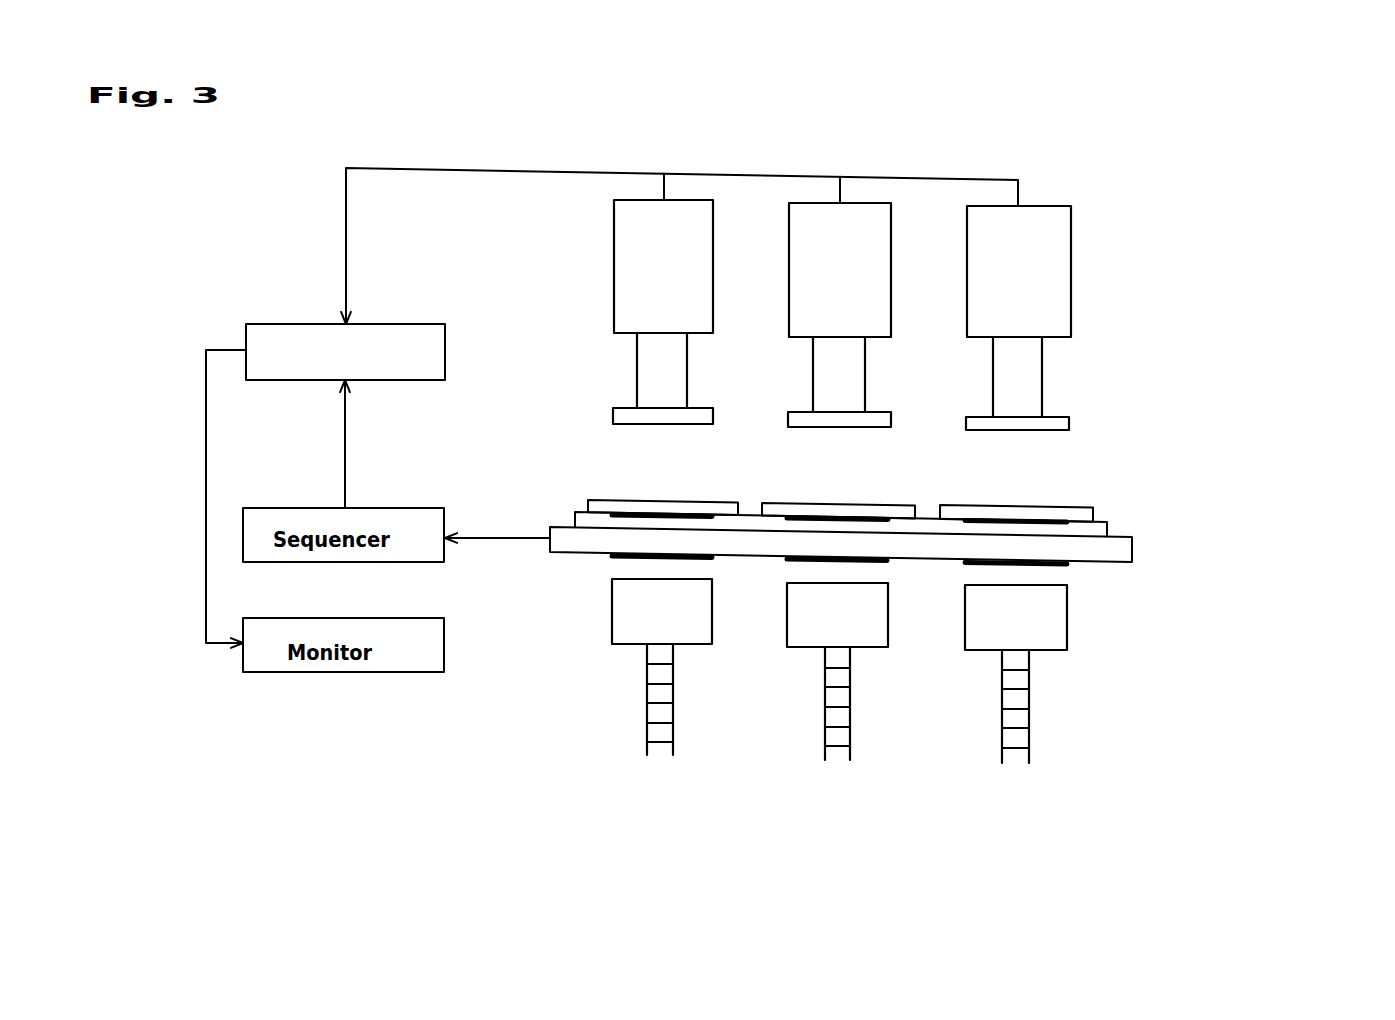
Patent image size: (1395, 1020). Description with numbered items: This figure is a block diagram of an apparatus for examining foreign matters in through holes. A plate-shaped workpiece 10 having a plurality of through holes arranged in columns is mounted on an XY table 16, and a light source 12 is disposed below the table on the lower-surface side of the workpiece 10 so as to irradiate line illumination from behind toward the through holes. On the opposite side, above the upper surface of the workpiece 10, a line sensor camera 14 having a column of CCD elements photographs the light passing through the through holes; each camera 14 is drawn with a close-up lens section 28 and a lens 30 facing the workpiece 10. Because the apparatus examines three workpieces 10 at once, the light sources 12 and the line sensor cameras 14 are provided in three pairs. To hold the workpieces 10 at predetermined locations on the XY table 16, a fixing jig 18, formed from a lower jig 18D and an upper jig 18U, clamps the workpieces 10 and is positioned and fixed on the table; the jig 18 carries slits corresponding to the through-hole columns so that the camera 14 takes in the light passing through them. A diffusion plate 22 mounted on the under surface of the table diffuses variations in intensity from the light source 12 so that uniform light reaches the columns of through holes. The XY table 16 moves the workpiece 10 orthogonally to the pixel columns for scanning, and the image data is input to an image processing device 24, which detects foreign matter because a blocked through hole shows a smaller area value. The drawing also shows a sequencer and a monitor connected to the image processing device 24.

The workpiece 10 is at (648, 510).
The light source 12 is at (1055, 652).
The line sensor camera 14 is at (1027, 272).
The XY table 16 is at (1077, 545).
The fixing jig 18 is at (976, 506).
The upper jig 18U is at (1073, 508).
The lower jig 18D is at (1092, 532).
The diffusion plate 22 is at (647, 558).
The image processing device 24 is at (420, 333).
The close-up lens section 28 is at (1033, 382).
The lens 30 is at (1043, 428).